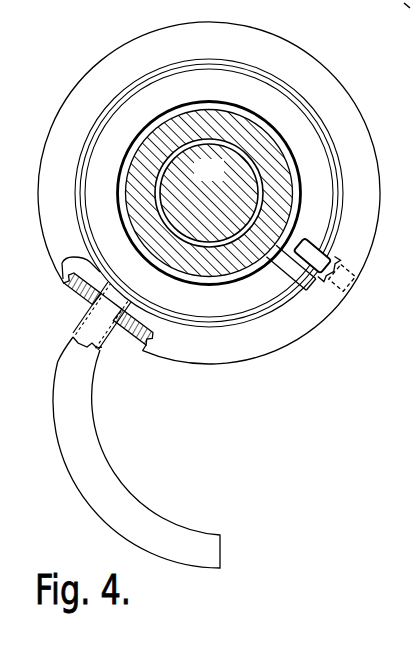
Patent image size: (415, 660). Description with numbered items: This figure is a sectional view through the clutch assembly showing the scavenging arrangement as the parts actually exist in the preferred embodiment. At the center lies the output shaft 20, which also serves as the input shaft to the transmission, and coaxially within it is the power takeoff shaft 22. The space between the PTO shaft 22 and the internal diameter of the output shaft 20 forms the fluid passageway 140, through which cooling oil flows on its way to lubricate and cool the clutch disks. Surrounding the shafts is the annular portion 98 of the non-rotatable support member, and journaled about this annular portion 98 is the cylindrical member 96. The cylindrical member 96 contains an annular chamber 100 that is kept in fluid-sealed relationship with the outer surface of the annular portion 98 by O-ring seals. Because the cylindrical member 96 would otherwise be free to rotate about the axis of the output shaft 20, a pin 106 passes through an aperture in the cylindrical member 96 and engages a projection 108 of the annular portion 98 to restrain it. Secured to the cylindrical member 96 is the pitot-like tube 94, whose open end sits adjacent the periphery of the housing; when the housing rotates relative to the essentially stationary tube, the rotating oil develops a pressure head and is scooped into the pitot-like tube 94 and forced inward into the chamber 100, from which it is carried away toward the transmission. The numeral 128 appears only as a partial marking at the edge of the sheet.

The output shaft 20 is at (134, 180).
The power takeoff shaft 22 is at (221, 179).
The pitot-like tube 94 is at (98, 458).
The cylindrical member 96 is at (122, 51).
The annular portion 98 is at (303, 138).
The annular chamber 100 is at (62, 264).
The pin 106 is at (321, 239).
The projection 108 is at (284, 282).
The adjacent figure numeral (partial) 128 is at (317, 1).
The fluid passageway 140 is at (219, 142).